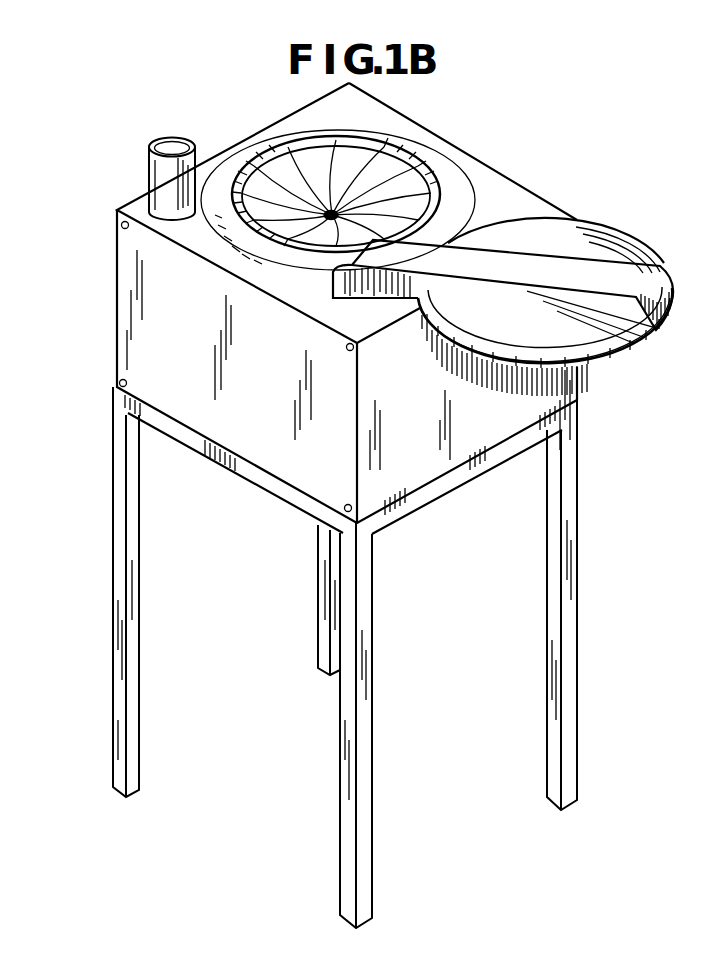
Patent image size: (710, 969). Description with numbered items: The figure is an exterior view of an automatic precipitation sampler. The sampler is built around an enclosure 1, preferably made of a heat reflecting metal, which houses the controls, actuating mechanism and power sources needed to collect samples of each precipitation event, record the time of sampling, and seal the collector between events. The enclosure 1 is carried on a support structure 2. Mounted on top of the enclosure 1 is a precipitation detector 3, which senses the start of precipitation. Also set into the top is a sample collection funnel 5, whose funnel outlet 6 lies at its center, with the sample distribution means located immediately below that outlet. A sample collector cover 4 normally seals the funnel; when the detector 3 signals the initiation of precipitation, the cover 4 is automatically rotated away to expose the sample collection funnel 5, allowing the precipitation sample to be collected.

The enclosure 1 is at (580, 382).
The support structure 2 is at (577, 672).
The precipitation detector 3 is at (174, 143).
The sample collector cover 4 is at (630, 253).
The sample collection funnel 5 is at (442, 183).
The funnel outlet 6 is at (326, 210).